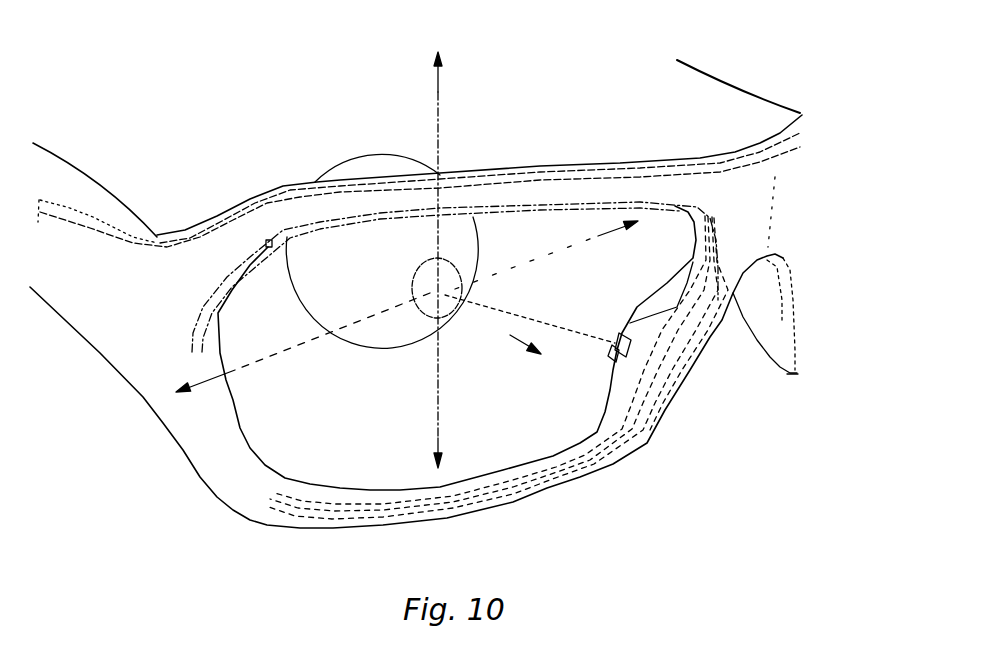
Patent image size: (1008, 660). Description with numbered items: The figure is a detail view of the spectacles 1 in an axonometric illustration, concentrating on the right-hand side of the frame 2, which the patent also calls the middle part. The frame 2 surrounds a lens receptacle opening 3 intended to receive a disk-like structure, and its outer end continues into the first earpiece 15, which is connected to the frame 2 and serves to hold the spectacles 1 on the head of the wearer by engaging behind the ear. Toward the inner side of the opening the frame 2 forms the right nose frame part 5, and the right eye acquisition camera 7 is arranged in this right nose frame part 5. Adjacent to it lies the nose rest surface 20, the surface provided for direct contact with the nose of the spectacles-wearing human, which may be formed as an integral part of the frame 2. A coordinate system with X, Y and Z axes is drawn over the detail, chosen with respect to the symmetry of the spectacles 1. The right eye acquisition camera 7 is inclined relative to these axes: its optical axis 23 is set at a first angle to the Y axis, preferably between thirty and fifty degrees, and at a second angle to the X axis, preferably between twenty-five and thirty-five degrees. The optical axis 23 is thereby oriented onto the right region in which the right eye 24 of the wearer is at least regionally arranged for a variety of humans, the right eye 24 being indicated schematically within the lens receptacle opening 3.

The spectacles 1 is at (349, 69).
The frame 2 is at (683, 180).
The lens receptacle opening 3 is at (325, 478).
The right nose frame part 5 is at (645, 358).
The right eye acquisition camera 7 is at (618, 353).
The first earpiece 15 is at (40, 162).
The nose rest surface 20 is at (763, 322).
The optical axis 23 is at (590, 335).
The right eye 24 is at (345, 167).